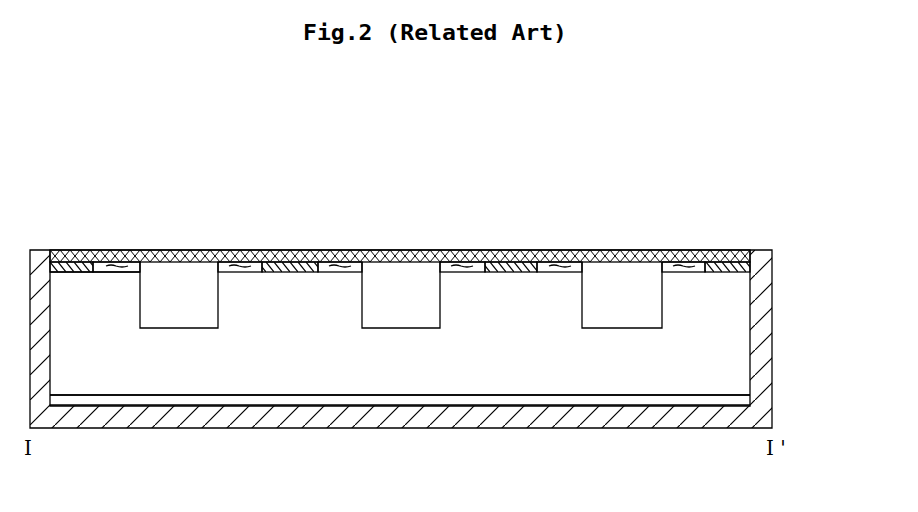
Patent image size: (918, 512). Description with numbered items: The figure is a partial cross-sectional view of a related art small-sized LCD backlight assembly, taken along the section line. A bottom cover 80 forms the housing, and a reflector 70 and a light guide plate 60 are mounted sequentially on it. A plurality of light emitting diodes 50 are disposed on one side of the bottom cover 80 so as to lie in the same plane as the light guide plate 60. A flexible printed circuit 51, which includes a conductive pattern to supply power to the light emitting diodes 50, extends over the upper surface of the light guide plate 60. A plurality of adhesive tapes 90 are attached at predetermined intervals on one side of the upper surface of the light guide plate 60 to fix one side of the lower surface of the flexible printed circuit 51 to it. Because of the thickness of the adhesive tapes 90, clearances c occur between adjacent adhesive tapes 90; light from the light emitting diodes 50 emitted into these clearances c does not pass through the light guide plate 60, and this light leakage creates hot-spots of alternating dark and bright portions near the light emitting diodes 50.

The light emitting diode 50 is at (616, 313).
The flexible printed circuit 51 is at (618, 252).
The light guide plate 60 is at (487, 377).
The reflector 70 is at (688, 401).
The bottom cover 80 is at (763, 329).
The adhesive tape 90 is at (72, 262).
The clearance c is at (118, 266).